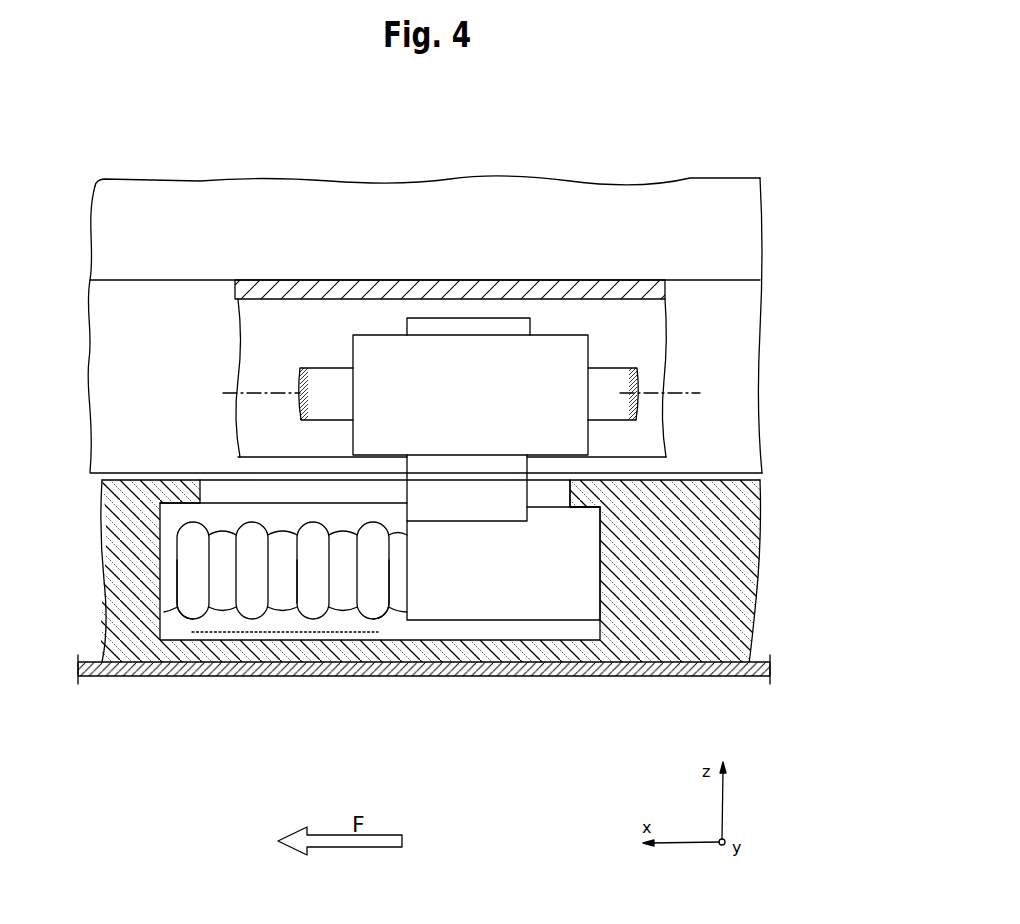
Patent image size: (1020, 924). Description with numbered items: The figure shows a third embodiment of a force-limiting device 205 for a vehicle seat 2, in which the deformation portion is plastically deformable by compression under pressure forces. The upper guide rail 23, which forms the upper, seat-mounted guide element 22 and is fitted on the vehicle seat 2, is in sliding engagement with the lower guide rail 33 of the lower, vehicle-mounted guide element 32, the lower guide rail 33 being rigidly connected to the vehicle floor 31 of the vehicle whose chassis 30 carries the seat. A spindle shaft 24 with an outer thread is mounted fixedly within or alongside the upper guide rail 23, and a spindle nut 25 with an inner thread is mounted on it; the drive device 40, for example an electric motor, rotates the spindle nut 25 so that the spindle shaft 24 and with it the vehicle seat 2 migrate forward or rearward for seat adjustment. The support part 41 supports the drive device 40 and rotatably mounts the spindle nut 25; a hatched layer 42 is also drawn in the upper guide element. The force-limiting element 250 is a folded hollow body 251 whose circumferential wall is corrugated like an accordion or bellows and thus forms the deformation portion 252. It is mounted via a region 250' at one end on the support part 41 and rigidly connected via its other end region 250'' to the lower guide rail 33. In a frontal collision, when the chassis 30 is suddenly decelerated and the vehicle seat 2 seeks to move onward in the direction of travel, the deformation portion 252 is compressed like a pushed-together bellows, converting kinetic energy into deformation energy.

The vehicle seat 2 is at (722, 218).
The upper, seat-mounted guide element 22 is at (764, 412).
The upper guide rail 23 is at (740, 328).
The hatched layer 42 is at (332, 342).
The spindle nut 25 is at (553, 362).
The spindle shaft 24 is at (605, 383).
The drive device 40 is at (470, 485).
The support part 41 is at (502, 572).
The lower, vehicle-mounted guide element 32 is at (762, 600).
The lower guide rail 33 is at (745, 532).
The force-limiting device 205 is at (229, 503).
The force-limiting element 250 is at (285, 640).
The region at one end 250' is at (409, 651).
The bellows left end 250'' is at (166, 650).
The folded hollow body 251 is at (317, 598).
The deformation portion 252 is at (278, 633).
The chassis 30 is at (604, 682).
The vehicle floor 31 is at (510, 678).